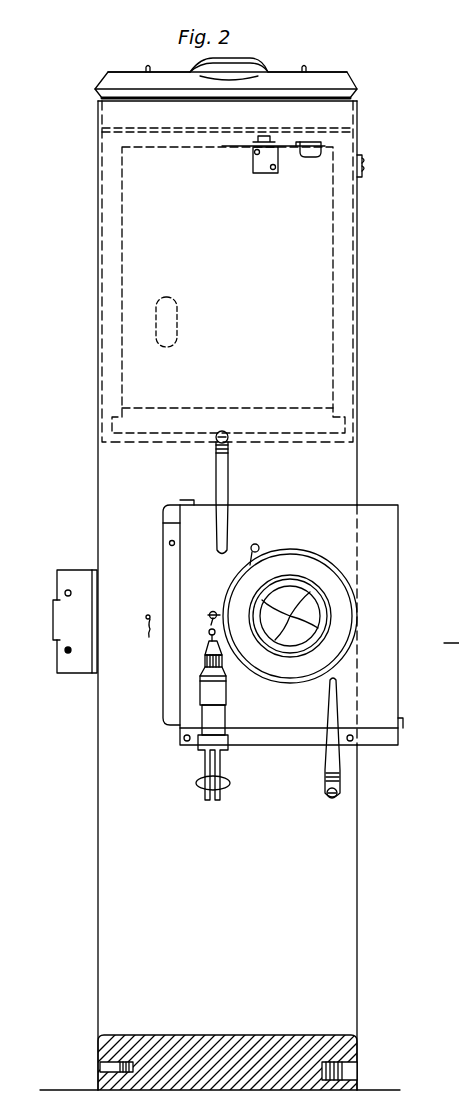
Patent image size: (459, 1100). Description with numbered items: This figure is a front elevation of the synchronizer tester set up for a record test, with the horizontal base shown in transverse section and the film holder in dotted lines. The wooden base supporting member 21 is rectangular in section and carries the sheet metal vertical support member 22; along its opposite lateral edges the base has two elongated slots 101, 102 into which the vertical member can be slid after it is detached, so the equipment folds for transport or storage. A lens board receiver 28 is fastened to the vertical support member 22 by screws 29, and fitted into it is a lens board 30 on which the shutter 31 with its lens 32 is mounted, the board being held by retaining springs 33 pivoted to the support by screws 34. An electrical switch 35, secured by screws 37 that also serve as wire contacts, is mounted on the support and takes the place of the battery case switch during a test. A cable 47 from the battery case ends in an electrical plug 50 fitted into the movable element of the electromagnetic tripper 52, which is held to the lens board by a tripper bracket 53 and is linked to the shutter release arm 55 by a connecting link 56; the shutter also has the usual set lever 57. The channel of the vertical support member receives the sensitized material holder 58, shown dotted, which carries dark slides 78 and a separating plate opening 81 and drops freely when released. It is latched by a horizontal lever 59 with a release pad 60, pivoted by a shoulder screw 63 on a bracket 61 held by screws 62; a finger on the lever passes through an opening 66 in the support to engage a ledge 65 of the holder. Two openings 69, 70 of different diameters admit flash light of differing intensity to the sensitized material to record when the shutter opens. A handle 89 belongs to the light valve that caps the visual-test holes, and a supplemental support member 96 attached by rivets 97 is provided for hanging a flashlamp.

The base supporting member 21 is at (222, 1040).
The vertical support member 22 is at (357, 867).
The lens board receiver 28 is at (162, 523).
The screws 29 is at (169, 544).
The lens board 30 is at (378, 510).
The shutter 31 is at (318, 572).
The lens 32 is at (321, 616).
The retaining springs 33 is at (227, 482).
The screws 34 is at (229, 435).
The electrical switch 35 is at (58, 620).
The screws 37 is at (64, 593).
The cable 47 is at (225, 788).
The electrical plug 50 is at (227, 750).
The electromagnetic tripper 52 is at (224, 715).
The tripper bracket 53 is at (225, 692).
The shutter release arm 55 is at (213, 612).
The connecting link 56 is at (209, 634).
The set lever 57 is at (259, 547).
The sensitized material holder 58 is at (342, 328).
The lever 59 is at (296, 146).
The release pad 60 is at (310, 152).
The bracket 61 is at (260, 170).
The screws 62 is at (254, 153).
The shoulder screw 63 is at (262, 136).
The ledge 65 is at (174, 135).
The opening 66 is at (252, 148).
The opening 69 is at (146, 619).
The opening 70 is at (150, 640).
The dark slide 78 is at (350, 78).
The opening 81 is at (165, 325).
The handle 89 is at (436, 642).
The supplemental support member 96 is at (361, 174).
The rivets 97 is at (363, 160).
The elongated slot 101 is at (99, 1066).
The elongated slot 102 is at (358, 1072).